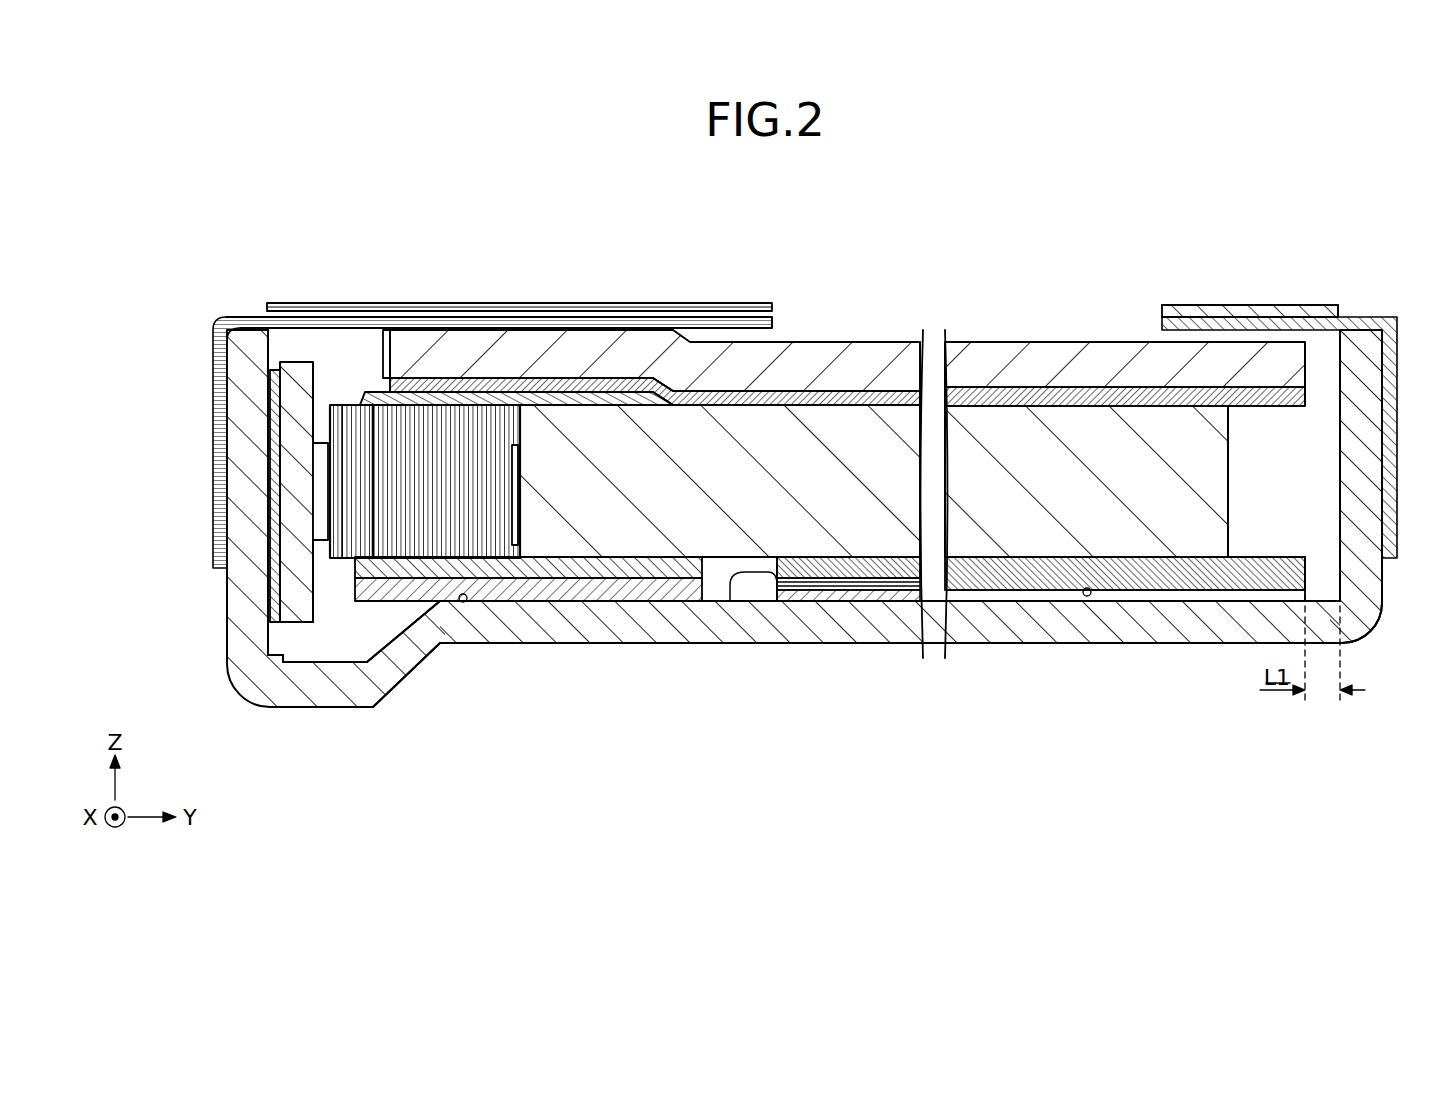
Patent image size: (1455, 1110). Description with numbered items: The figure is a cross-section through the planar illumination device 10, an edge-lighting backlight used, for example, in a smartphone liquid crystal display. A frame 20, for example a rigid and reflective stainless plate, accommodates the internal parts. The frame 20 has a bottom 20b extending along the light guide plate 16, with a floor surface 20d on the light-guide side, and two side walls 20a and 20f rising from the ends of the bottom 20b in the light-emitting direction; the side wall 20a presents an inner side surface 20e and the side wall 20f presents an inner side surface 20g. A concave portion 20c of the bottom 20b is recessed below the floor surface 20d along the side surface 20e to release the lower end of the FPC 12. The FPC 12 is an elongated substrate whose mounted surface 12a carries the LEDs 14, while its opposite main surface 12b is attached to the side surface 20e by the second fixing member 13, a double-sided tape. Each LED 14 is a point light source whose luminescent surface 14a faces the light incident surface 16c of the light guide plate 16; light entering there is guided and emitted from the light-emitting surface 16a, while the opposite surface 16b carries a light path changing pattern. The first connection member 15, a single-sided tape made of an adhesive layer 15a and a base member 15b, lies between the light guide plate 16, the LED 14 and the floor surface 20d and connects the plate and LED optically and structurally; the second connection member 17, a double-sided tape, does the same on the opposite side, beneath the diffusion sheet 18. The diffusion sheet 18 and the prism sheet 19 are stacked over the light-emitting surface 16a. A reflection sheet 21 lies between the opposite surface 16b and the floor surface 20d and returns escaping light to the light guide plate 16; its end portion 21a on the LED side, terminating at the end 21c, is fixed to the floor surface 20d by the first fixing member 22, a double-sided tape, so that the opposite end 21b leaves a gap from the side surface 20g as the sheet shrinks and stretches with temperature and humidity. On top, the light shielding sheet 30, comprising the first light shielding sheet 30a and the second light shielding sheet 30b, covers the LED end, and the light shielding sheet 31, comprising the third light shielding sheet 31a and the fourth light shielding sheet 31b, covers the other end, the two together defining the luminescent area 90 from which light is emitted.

The planar illumination device 10 is at (697, 273).
The FPC 12 is at (292, 622).
The mounted surface 12a is at (327, 560).
The main surface 12b is at (280, 590).
The second fixing member 13 is at (280, 627).
The LED 14 is at (347, 545).
The luminescent surface 14a is at (526, 520).
The first connection member 15 is at (536, 659).
The adhesive layer 15a is at (685, 572).
The base member 15b is at (643, 592).
The light guide plate 16 is at (853, 437).
The light-emitting surface 16a is at (800, 405).
The opposite surface 16b is at (848, 560).
The light incident surface 16c is at (515, 478).
The second connection member 17 is at (386, 352).
The diffusion sheet 18 is at (880, 405).
The prism sheet 19 is at (822, 362).
The frame 20 is at (247, 343).
The side wall 20a is at (255, 598).
The bottom 20b is at (585, 630).
The concave portion 20c is at (403, 694).
The floor surface 20d is at (742, 590).
The side surface 20e is at (277, 666).
The side wall 20f is at (1392, 328).
The side surface 20g is at (1362, 630).
The reflection sheet 21 is at (905, 577).
The end portion 21a is at (776, 601).
The end 21b is at (1333, 588).
The end 21c is at (777, 560).
The first fixing member 22 is at (855, 603).
The light shielding sheet 30 is at (499, 265).
The first light shielding sheet 30a is at (442, 303).
The second light shielding sheet 30b is at (418, 247).
The light shielding sheet 31 is at (1236, 248).
The third light shielding sheet 31a is at (1162, 305).
The fourth light shielding sheet 31b is at (1250, 274).
The luminescent area 90 is at (975, 320).